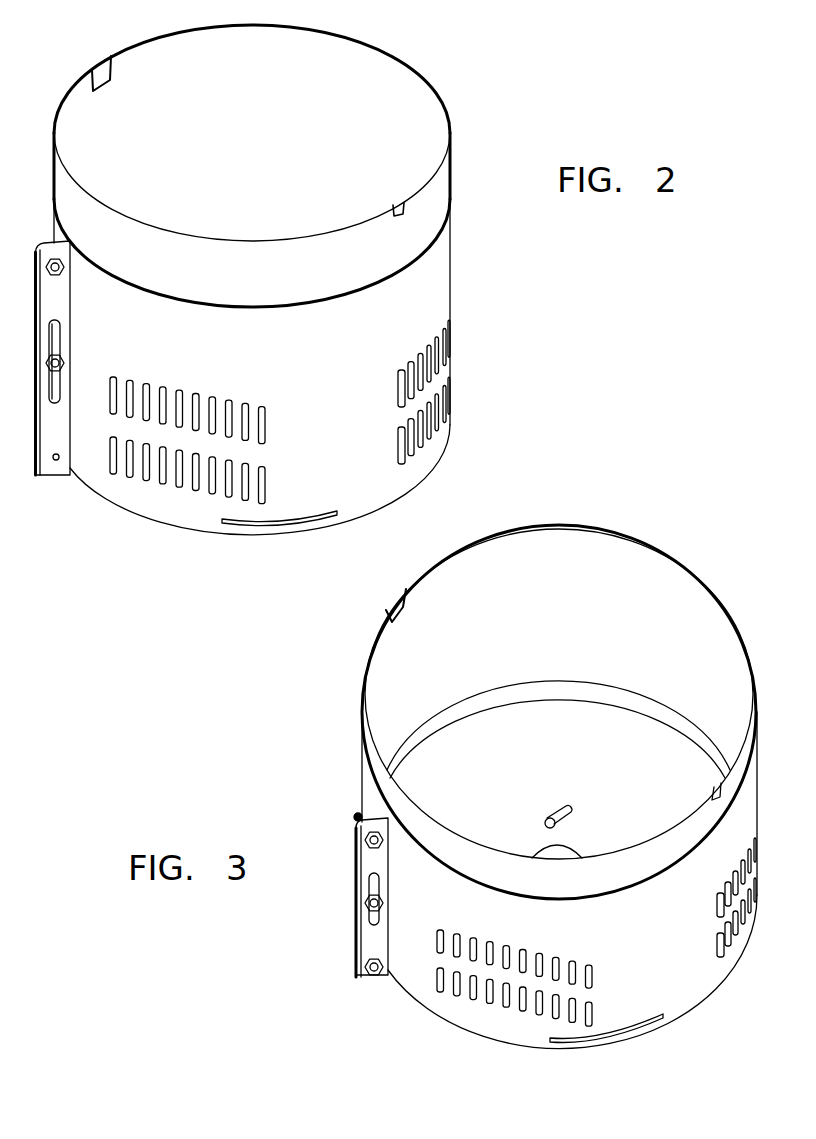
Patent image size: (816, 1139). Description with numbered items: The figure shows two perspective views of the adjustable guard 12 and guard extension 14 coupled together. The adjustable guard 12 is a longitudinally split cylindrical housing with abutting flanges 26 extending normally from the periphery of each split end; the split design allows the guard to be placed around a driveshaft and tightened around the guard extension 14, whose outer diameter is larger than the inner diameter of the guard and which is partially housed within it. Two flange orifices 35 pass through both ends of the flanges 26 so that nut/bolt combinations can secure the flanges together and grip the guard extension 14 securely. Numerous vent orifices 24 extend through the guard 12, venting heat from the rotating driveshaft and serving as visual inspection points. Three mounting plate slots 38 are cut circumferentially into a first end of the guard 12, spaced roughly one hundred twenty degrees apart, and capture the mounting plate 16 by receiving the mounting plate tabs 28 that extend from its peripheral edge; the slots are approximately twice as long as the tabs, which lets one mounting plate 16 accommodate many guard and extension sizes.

In FIG. 2, the adjustable guard 12 is at (450, 280).
In FIG. 2, the guard extension 14 is at (384, 53).
In FIG. 3, the mounting plate 16 is at (567, 744).
In FIG. 2, the vent orifices 24 is at (112, 472).
In FIG. 3, the abutting flanges 26 is at (370, 976).
In FIG. 3, the mounting plate tabs 28 is at (614, 1028).
In FIG. 2, the flange orifices 35 is at (56, 460).
In FIG. 2, the mounting plate slots 38 is at (338, 514).